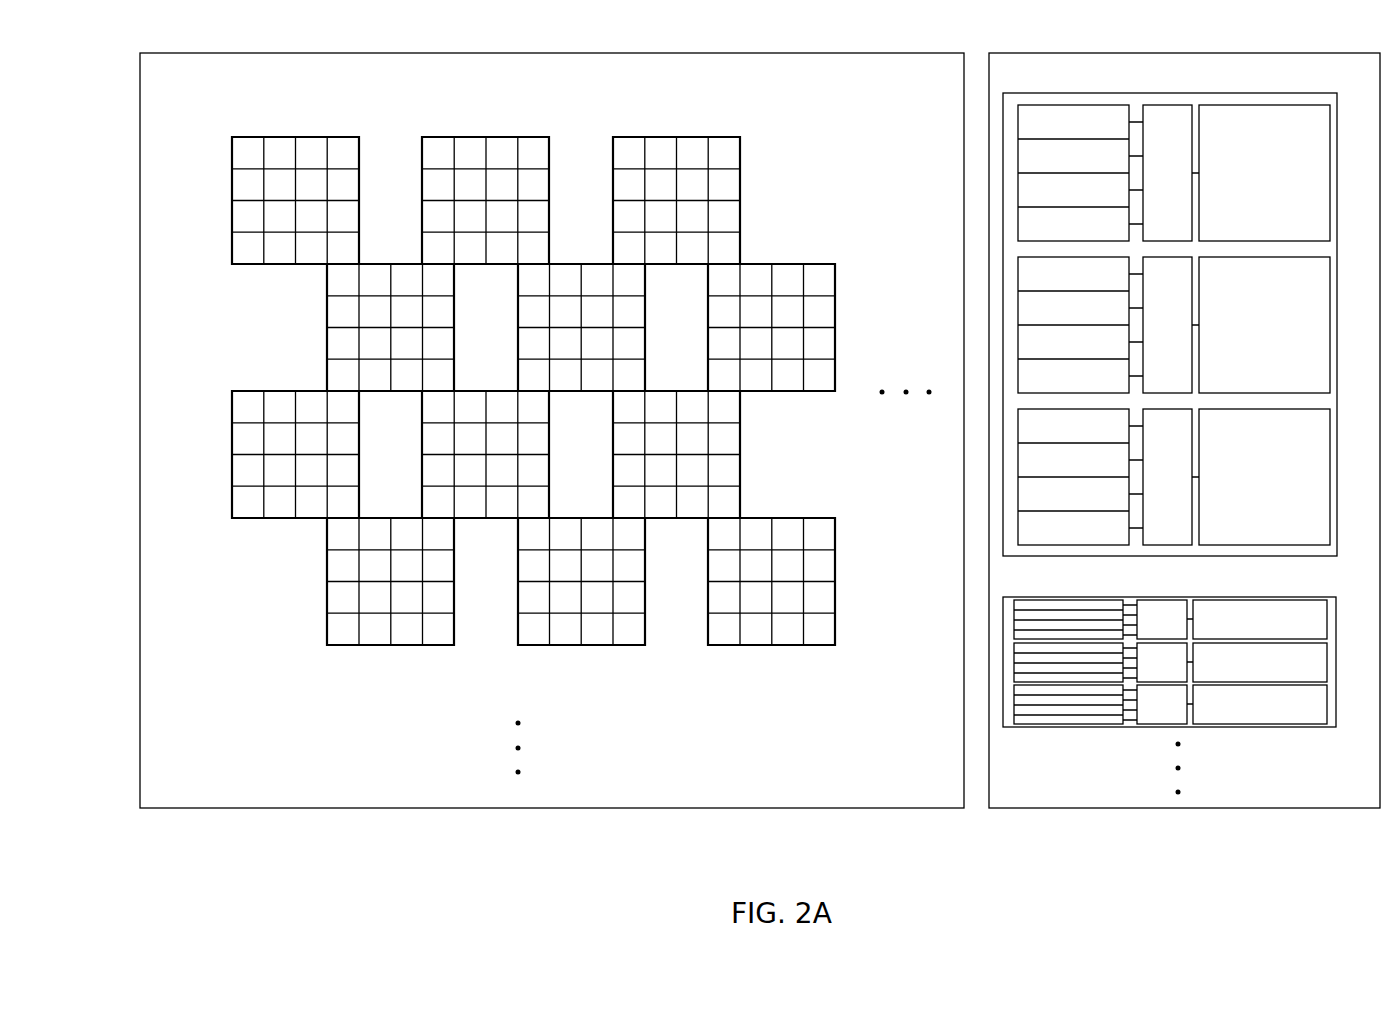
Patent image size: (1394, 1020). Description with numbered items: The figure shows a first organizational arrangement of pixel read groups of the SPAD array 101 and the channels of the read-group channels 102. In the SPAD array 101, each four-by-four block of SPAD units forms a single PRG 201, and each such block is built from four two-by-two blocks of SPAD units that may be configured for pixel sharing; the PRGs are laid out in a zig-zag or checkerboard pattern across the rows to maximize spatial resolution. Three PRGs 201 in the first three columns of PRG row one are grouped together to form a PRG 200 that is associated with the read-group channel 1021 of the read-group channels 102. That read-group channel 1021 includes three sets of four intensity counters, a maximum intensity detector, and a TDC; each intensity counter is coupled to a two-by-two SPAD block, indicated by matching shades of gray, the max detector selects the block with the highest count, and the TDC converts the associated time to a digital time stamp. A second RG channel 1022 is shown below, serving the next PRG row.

The SPAD array 101 is at (219, 53).
The read-group channels 102 is at (1054, 53).
The PRG 200 is at (738, 122).
The PRG 201 is at (299, 137).
The read-group channel 1021 is at (1062, 93).
The RG channel 1022 is at (1062, 597).